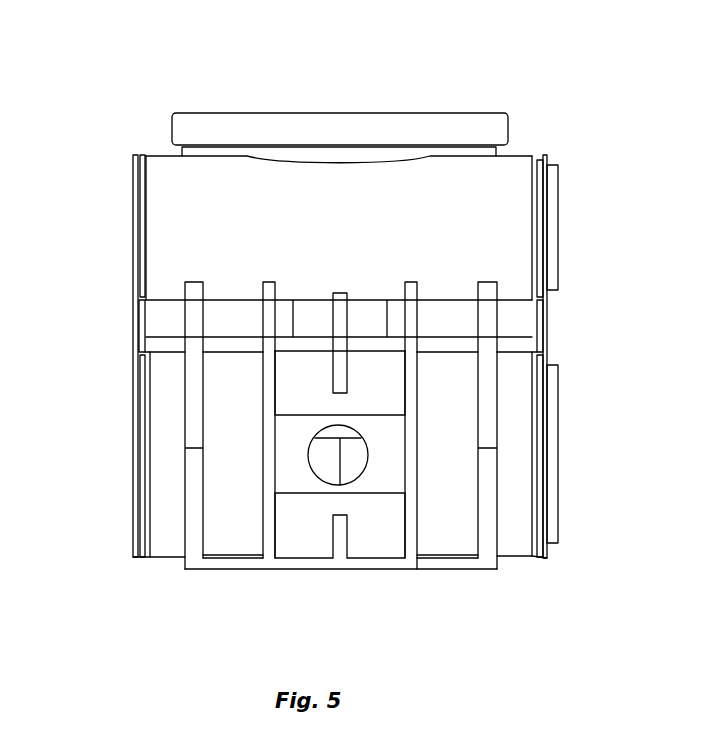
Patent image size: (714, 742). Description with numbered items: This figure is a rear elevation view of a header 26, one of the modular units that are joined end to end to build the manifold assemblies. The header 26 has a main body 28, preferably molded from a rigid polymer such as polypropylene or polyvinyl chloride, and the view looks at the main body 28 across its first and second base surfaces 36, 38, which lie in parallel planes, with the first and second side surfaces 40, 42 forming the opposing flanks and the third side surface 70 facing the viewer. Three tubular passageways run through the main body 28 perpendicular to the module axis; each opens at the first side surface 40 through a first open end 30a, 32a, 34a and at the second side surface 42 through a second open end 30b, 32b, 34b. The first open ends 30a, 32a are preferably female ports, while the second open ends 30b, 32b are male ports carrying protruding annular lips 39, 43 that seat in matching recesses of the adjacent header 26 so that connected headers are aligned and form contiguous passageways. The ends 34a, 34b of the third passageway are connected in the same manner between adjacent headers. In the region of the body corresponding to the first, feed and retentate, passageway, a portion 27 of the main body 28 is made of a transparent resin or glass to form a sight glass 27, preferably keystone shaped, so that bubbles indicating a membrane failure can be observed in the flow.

The header 26 is at (548, 66).
The second side surface 42 is at (162, 155).
The first base surface 36 is at (517, 153).
The annular lip 39 is at (132, 202).
The first open end of the second passageway 32a is at (558, 218).
The second open end of the second passageway 32b is at (132, 257).
The first open end of the third passageway 34a is at (537, 328).
The second open end of the third passageway 34b is at (132, 327).
The annular lip 43 is at (132, 410).
The first open end of the first passageway 30a is at (558, 442).
The second open end of the first passageway 30b is at (132, 470).
The main body 28 is at (200, 490).
The second base surface 38 is at (160, 557).
The first side surface 40 is at (518, 558).
The sight glass 27 is at (325, 452).
The third side surface 70 is at (445, 543).